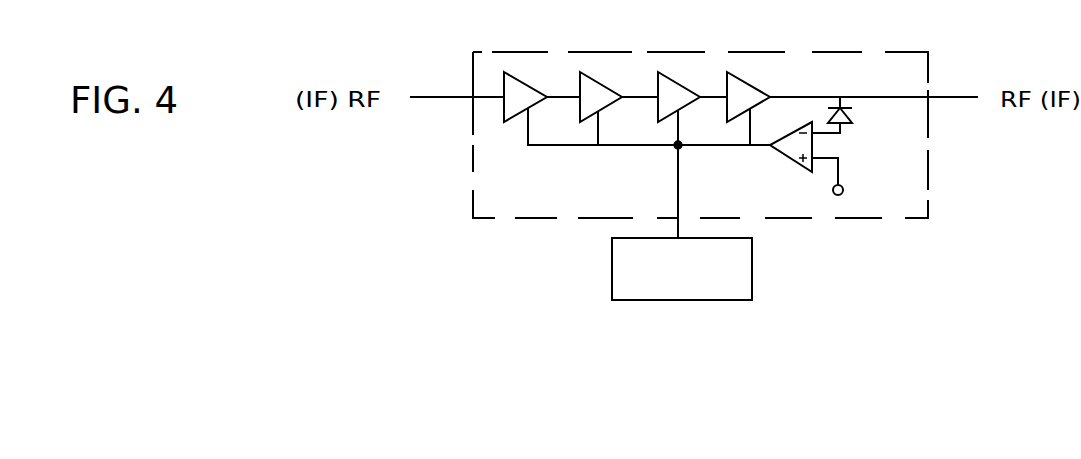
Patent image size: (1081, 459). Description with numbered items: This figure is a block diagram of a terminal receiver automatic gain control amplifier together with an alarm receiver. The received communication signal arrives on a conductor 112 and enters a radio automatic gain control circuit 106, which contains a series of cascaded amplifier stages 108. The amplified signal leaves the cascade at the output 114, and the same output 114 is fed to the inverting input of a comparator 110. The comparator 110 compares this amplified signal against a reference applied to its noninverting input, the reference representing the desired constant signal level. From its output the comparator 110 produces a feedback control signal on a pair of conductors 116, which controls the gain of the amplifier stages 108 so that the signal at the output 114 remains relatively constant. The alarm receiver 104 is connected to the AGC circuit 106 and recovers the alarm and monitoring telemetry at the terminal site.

The alarm receiver 104 is at (752, 270).
The automatic gain control circuit 106 is at (828, 47).
The amplifier stages 108 is at (697, 72).
The comparator 110 is at (790, 160).
The conductor 112 is at (432, 100).
The output 114 is at (954, 100).
The conductors 116 is at (618, 147).